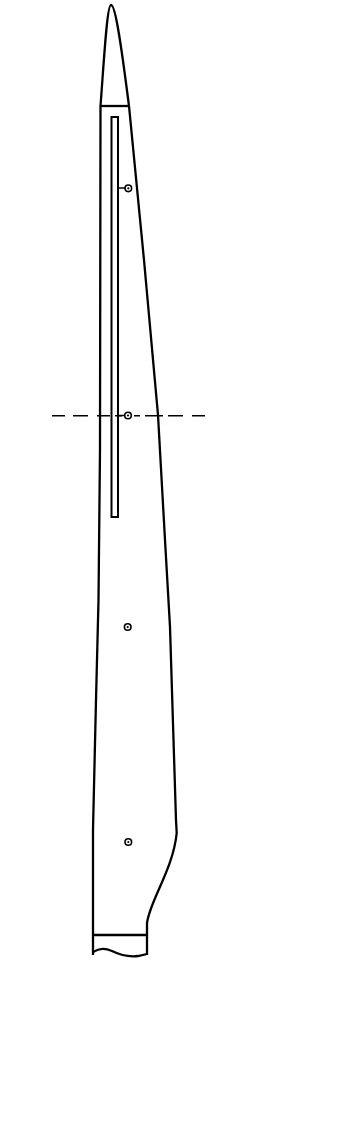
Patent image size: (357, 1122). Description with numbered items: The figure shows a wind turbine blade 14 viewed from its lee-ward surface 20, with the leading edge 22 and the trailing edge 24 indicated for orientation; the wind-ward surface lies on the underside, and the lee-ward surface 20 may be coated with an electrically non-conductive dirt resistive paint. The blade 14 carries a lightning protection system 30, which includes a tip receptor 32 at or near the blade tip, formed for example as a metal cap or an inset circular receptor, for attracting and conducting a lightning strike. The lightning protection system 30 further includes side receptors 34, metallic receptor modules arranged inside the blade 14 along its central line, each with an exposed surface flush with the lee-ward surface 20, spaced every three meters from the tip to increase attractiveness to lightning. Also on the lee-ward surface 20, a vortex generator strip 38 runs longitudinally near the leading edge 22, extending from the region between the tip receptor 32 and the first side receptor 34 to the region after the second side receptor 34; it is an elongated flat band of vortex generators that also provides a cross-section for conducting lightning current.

The wind turbine blade 14 is at (145, 541).
The lee-ward surface 20 is at (135, 480).
The leading edge 22 is at (100, 628).
The trailing edge 24 is at (168, 752).
The lightning protection system 30 is at (128, 197).
The tip receptor 32 is at (117, 73).
The side receptor 34 is at (132, 188).
The vortex generator strip 38 is at (112, 305).